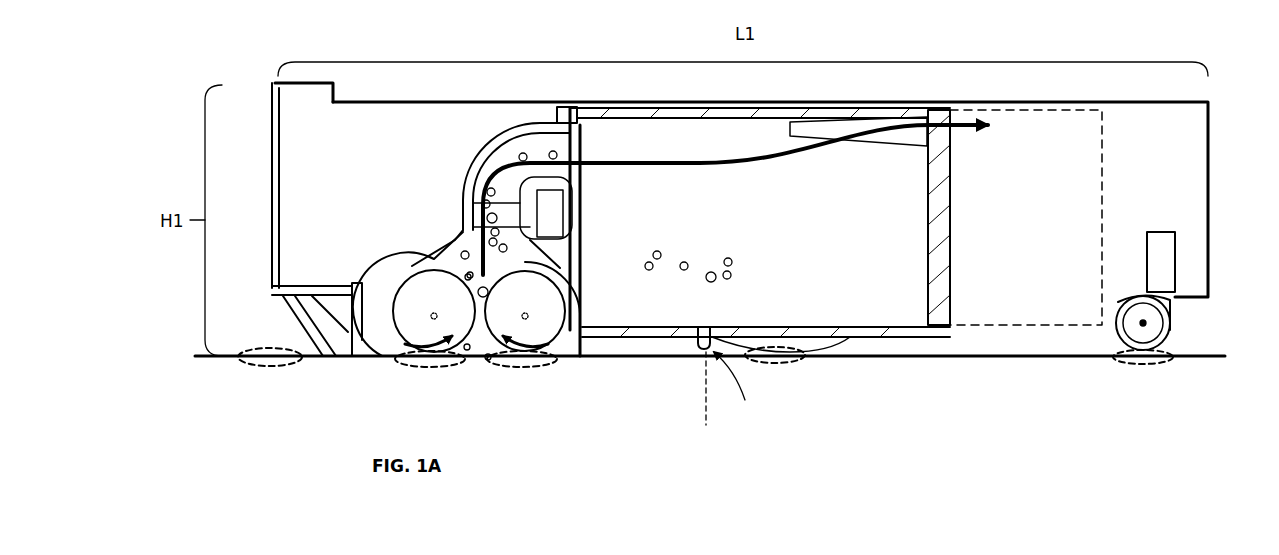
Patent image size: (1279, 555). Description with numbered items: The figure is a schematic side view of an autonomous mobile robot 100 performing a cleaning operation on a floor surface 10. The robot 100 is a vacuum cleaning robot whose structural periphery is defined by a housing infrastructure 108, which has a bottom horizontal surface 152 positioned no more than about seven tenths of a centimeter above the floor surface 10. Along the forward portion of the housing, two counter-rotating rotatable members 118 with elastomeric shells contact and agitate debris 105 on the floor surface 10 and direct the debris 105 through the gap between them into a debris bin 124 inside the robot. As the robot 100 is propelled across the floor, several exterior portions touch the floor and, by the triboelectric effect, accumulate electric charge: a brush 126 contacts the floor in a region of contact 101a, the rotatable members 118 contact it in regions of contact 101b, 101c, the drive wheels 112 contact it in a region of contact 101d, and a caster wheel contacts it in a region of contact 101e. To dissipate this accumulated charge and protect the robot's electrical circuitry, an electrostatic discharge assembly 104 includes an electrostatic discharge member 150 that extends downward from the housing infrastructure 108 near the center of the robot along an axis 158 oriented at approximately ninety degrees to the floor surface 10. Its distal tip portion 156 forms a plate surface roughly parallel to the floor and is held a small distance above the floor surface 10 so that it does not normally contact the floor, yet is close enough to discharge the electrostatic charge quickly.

The autonomous mobile robot 100 is at (260, 92).
The floor surface 10 is at (198, 357).
The region of contact 101a is at (262, 363).
The region of contact 101b is at (420, 363).
The region of contact 101c is at (520, 363).
The region of contact 101d is at (798, 357).
The region of contact 101e is at (1135, 363).
The electrostatic discharge assembly 104 is at (686, 338).
The debris 105 is at (733, 270).
The housing infrastructure 108 is at (1208, 181).
The drive wheels 112 is at (820, 342).
The rotatable members 118 is at (479, 311).
The debris bin 124 is at (836, 219).
The brush 126 is at (296, 345).
The electrostatic discharge member 150 is at (709, 326).
The bottom horizontal surface 152 is at (882, 331).
The distal tip portion 156 is at (700, 346).
The axis 158 is at (705, 392).